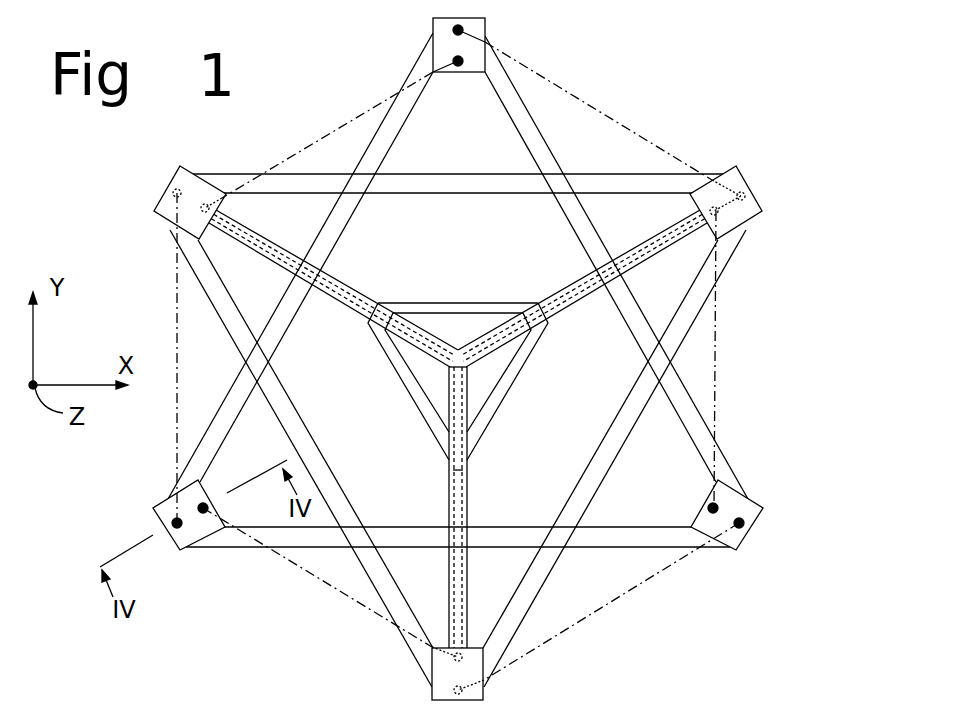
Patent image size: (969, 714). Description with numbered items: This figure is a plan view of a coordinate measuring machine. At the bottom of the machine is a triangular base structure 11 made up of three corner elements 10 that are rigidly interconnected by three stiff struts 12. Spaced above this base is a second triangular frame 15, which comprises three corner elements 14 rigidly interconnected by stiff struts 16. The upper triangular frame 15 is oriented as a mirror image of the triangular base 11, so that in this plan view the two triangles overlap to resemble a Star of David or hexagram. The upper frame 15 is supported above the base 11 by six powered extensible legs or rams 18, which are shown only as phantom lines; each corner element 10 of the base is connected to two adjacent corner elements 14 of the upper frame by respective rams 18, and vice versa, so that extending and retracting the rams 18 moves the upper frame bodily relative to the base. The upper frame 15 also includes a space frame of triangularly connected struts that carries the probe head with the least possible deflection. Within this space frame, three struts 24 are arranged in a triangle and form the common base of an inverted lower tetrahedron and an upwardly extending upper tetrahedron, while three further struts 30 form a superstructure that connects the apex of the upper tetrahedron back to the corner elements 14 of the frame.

The corner element 10 is at (486, 19).
The triangular base structure 11 is at (627, 555).
The stiff strut 12 is at (240, 372).
The corner element 14 is at (173, 177).
The triangular frame 15 is at (535, 603).
The stiff strut 16 is at (650, 173).
The powered extensible leg or ram 18 is at (610, 115).
The strut 24 is at (451, 300).
The strut 30 is at (332, 275).